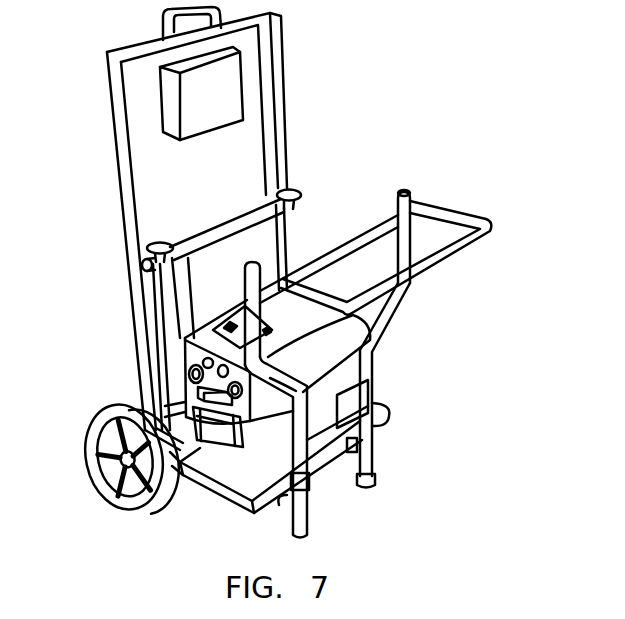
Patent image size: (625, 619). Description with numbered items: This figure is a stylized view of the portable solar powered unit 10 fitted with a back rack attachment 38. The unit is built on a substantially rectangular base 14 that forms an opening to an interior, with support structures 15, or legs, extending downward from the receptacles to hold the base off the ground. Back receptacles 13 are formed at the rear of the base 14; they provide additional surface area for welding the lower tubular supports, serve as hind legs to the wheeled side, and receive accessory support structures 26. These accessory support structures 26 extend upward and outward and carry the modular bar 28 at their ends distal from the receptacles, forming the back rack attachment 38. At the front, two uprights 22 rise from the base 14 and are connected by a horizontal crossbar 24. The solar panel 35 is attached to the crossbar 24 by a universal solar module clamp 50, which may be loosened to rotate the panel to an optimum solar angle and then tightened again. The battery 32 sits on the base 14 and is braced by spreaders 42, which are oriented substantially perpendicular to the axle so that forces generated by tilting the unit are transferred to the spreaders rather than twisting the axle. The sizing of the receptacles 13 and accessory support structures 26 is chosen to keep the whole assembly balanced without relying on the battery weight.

The portable solar powered unit 10 is at (101, 124).
The solar panel 35 is at (118, 191).
The universal solar module clamp 50 is at (159, 287).
The crossbar 24 is at (221, 234).
The uprights 22 is at (189, 288).
The accessory support structures 26 is at (274, 380).
The modular bar 28 is at (334, 257).
The back rack attachment 38 is at (419, 268).
The battery 32 is at (349, 377).
The base 14 is at (209, 491).
The support structures 15 is at (301, 510).
The spreaders 42 is at (352, 452).
The back receptacles 13 is at (292, 471).